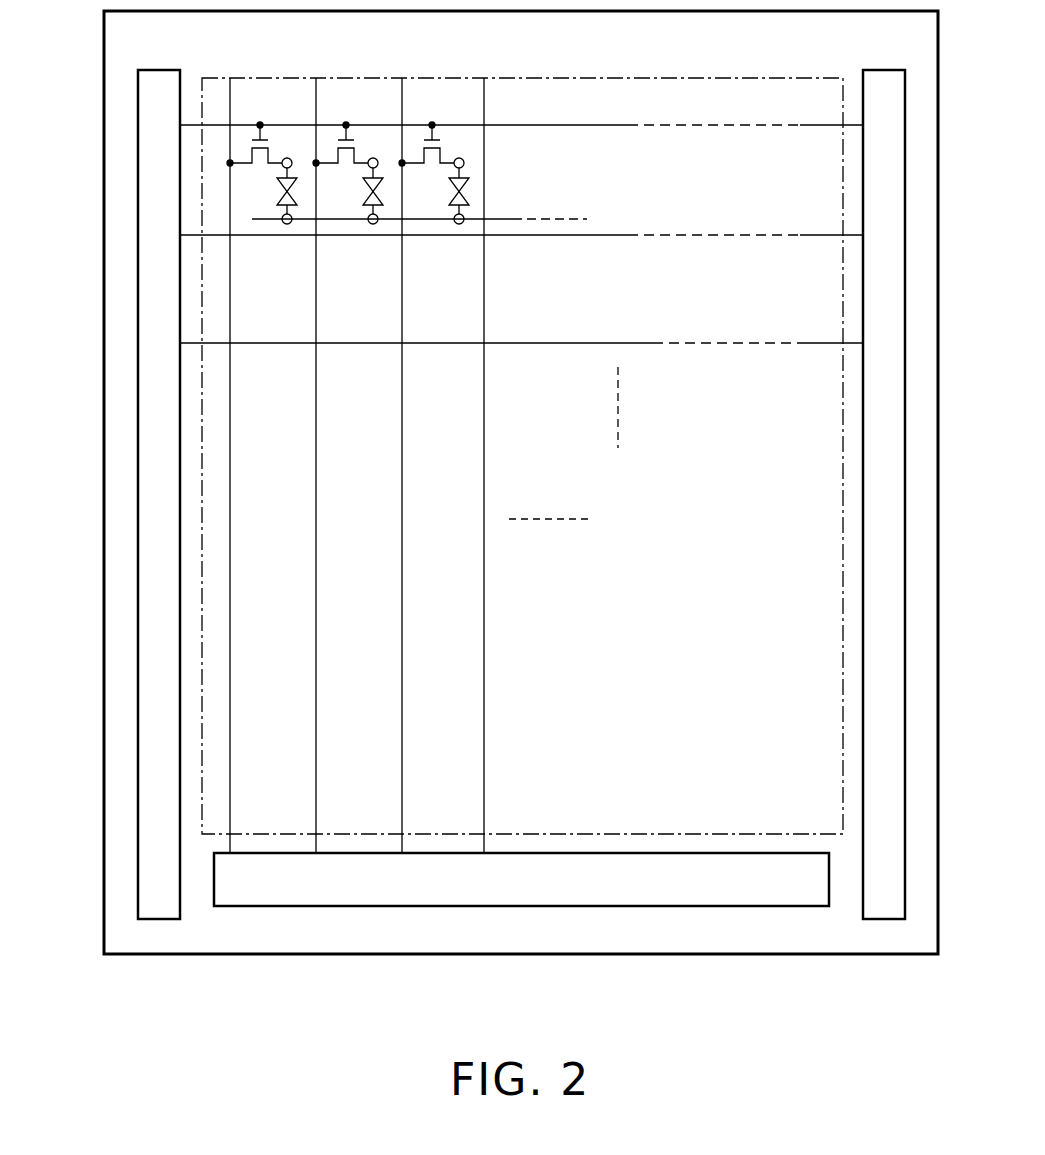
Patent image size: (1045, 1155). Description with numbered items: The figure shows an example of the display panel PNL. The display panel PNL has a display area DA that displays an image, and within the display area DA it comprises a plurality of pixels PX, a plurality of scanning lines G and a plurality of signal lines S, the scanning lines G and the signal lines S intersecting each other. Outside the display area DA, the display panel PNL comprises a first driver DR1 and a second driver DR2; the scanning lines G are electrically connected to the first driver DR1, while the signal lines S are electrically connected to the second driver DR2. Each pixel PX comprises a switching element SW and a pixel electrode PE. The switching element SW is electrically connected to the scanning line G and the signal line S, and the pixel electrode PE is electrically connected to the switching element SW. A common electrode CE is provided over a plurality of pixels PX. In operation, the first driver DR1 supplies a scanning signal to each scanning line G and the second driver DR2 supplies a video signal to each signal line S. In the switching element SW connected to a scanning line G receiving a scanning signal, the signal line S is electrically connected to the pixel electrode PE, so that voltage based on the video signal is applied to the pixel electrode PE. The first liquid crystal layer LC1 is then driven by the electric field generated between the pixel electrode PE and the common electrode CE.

The display panel PNL is at (289, 931).
The first driver DR1 is at (138, 398).
The second driver DR2 is at (748, 906).
The display area DA is at (720, 78).
The scanning line G is at (628, 126).
The signal line S is at (232, 620).
The common electrode CE is at (462, 225).
The pixel PX is at (413, 123).
The switching element SW is at (445, 152).
The pixel electrode PE is at (464, 165).
The first liquid crystal layer LC1 is at (469, 191).